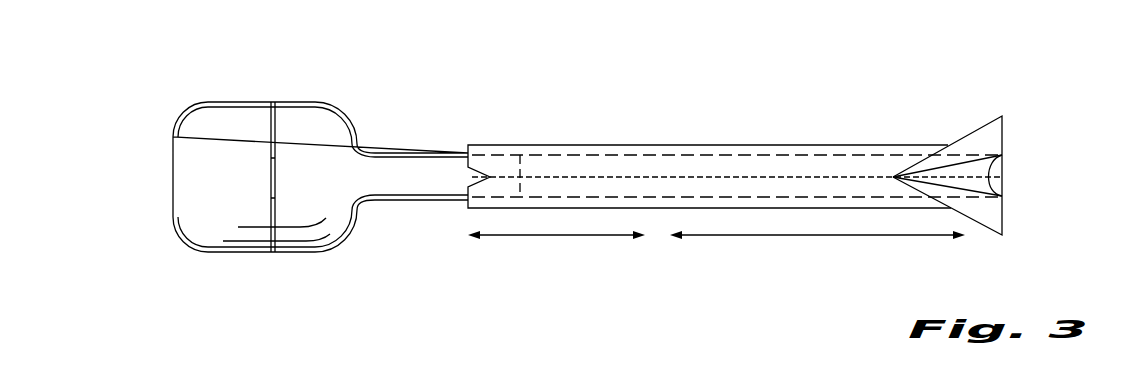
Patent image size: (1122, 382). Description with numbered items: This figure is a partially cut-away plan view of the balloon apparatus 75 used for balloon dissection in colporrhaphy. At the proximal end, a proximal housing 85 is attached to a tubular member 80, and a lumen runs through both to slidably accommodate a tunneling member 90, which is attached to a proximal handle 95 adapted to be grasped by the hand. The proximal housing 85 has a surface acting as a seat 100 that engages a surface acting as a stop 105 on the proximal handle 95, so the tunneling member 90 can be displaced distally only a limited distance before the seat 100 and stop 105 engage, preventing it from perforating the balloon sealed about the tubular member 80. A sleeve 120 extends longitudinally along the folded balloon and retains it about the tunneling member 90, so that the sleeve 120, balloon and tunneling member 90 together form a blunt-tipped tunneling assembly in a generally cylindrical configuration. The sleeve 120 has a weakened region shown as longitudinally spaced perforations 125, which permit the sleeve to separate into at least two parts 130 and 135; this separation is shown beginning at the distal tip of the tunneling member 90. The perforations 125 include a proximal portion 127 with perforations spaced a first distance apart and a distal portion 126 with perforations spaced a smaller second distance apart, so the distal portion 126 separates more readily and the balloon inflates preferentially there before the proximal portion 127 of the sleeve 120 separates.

The balloon apparatus 75 is at (559, 68).
The tubular member 80 is at (413, 152).
The proximal housing 85 is at (327, 104).
The tunneling member 90 is at (1000, 178).
The proximal handle 95 is at (233, 254).
The seat 100 is at (275, 212).
The stop 105 is at (270, 137).
The sleeve 120 is at (815, 145).
The perforations 125 is at (760, 177).
The distal portion 126 is at (858, 237).
The proximal portion 127 is at (553, 237).
The sleeve part 130 is at (1000, 208).
The sleeve part 135 is at (990, 139).